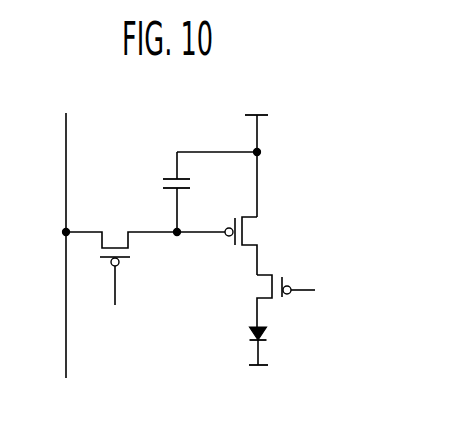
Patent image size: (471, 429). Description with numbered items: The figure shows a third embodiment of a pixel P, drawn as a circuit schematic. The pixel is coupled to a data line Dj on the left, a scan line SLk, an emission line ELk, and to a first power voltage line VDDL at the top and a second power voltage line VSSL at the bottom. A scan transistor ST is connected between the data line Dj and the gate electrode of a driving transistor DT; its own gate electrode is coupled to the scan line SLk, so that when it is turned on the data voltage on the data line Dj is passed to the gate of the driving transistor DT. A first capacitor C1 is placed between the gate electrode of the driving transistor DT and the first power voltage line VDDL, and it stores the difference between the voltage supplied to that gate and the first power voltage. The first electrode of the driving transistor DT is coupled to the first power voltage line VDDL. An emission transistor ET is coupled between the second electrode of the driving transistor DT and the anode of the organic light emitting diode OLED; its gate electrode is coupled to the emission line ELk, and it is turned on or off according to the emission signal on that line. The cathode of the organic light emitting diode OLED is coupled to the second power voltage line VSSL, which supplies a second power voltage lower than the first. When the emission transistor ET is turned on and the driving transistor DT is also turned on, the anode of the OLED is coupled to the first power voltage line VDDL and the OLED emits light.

The data line Dj is at (65, 231).
The scan transistor ST is at (145, 237).
The scan line SLk is at (113, 299).
The first capacitor C1 is at (212, 192).
The first power voltage line VDDL is at (258, 153).
The driving transistor DT is at (253, 246).
The emission transistor ET is at (264, 301).
The emission line ELk is at (319, 291).
The organic light emitting diode OLED is at (281, 344).
The second power voltage line VSSL is at (258, 381).